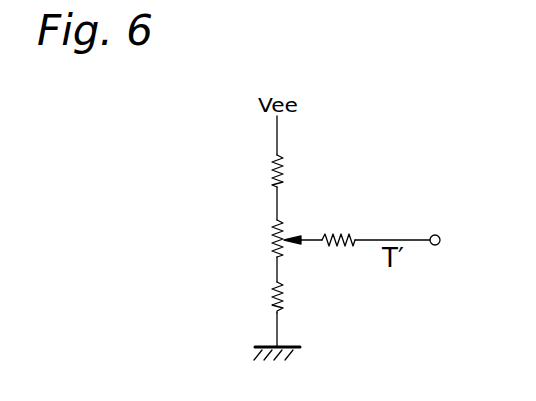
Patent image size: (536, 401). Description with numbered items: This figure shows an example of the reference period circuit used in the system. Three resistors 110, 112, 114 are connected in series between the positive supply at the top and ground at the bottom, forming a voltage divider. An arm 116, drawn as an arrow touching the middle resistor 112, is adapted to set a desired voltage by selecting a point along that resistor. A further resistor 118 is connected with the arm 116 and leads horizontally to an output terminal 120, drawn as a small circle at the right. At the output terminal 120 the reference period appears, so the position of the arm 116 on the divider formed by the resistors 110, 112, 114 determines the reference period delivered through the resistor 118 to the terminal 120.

The resistor 110 is at (266, 162).
The resistor 112 is at (266, 232).
The resistor 114 is at (266, 295).
The arm 116 is at (306, 240).
The resistor 118 is at (355, 238).
The output terminal 120 is at (435, 246).